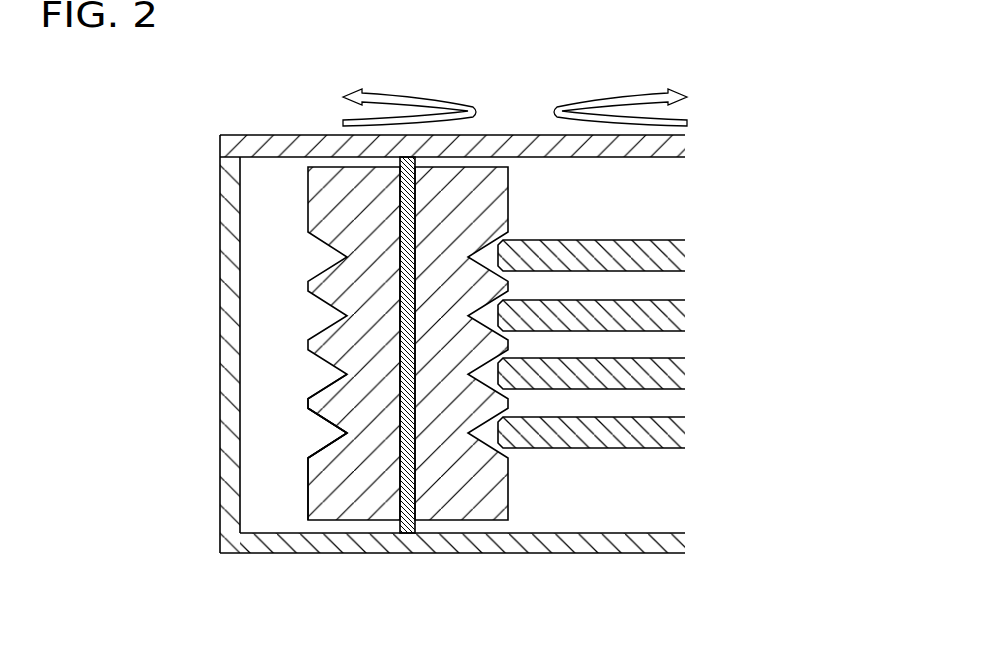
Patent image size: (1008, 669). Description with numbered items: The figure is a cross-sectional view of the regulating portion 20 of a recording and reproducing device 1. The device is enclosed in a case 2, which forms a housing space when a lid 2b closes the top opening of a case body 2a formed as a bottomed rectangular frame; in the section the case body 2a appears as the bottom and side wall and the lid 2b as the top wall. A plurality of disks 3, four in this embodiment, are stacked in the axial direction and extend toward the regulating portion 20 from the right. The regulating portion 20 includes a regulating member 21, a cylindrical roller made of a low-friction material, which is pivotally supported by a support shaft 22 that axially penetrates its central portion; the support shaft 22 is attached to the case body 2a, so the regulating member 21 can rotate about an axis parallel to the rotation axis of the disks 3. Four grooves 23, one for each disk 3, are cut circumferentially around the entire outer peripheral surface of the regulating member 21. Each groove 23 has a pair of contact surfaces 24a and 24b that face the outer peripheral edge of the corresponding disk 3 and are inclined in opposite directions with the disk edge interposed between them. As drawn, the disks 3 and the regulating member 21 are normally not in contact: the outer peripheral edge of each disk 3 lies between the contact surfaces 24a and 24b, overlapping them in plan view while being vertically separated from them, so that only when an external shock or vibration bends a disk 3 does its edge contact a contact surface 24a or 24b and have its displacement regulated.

The recording and reproducing device 1 is at (110, 114).
The case 2 is at (218, 352).
The case body 2a is at (539, 553).
The lid 2b is at (521, 135).
The disk 3 is at (596, 450).
The regulating portion 20 is at (457, 524).
The regulating member 21 is at (318, 493).
The support shaft 22 is at (407, 524).
The groove 23 is at (319, 437).
The contact surface 24a is at (311, 460).
The contact surface 24b is at (320, 418).